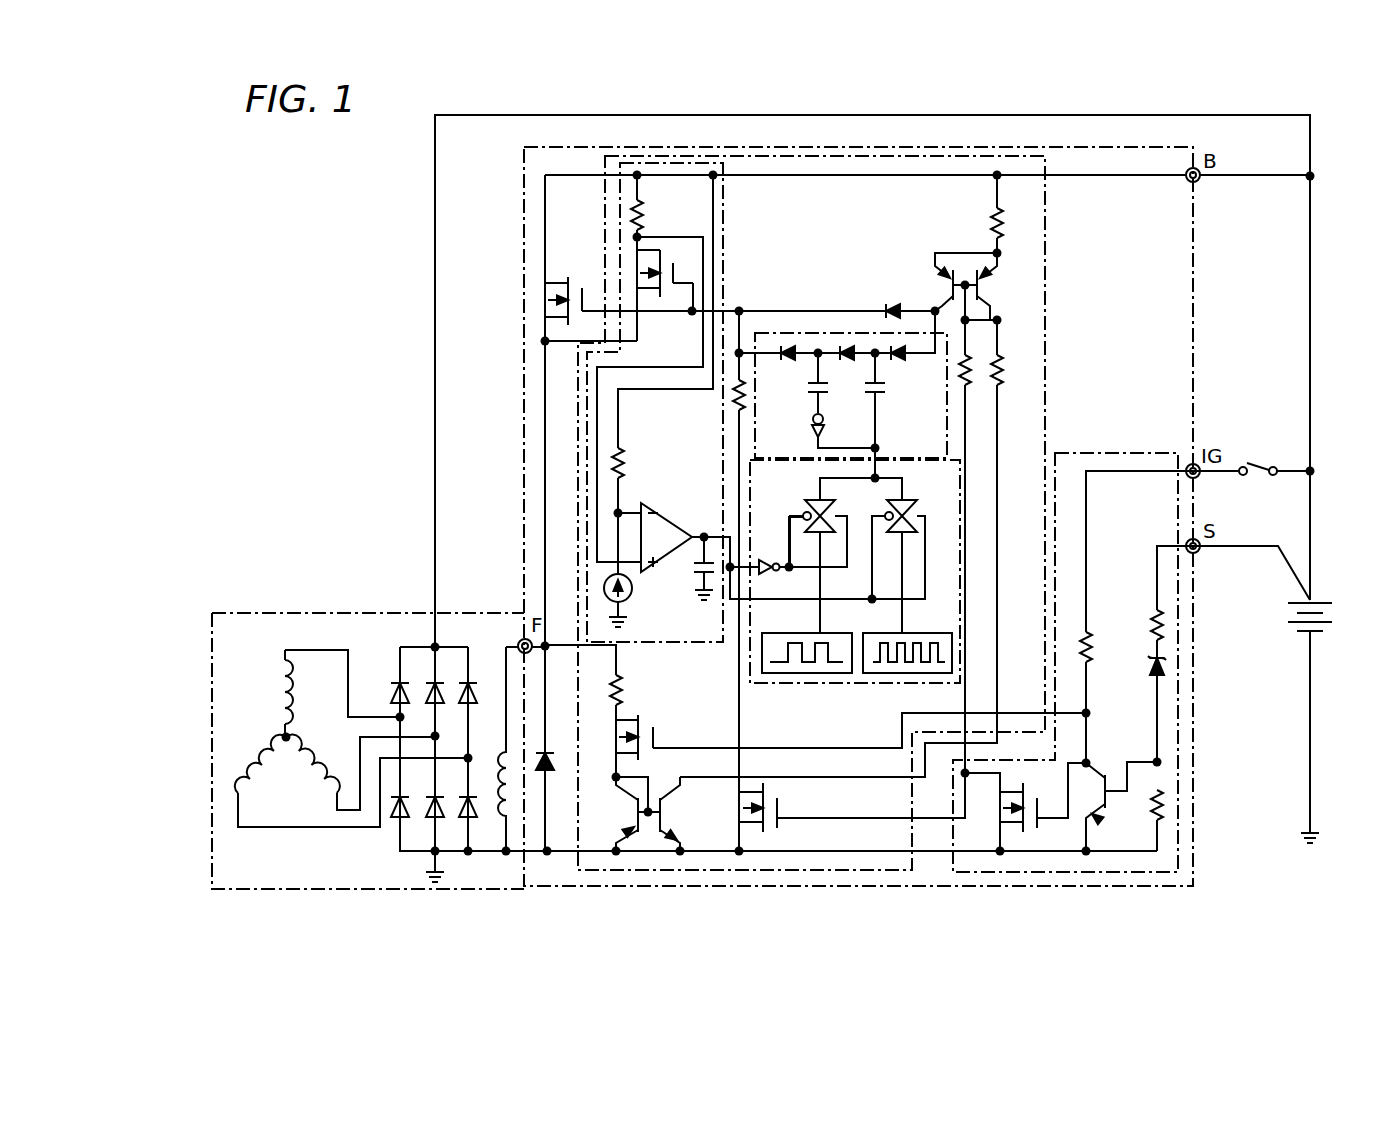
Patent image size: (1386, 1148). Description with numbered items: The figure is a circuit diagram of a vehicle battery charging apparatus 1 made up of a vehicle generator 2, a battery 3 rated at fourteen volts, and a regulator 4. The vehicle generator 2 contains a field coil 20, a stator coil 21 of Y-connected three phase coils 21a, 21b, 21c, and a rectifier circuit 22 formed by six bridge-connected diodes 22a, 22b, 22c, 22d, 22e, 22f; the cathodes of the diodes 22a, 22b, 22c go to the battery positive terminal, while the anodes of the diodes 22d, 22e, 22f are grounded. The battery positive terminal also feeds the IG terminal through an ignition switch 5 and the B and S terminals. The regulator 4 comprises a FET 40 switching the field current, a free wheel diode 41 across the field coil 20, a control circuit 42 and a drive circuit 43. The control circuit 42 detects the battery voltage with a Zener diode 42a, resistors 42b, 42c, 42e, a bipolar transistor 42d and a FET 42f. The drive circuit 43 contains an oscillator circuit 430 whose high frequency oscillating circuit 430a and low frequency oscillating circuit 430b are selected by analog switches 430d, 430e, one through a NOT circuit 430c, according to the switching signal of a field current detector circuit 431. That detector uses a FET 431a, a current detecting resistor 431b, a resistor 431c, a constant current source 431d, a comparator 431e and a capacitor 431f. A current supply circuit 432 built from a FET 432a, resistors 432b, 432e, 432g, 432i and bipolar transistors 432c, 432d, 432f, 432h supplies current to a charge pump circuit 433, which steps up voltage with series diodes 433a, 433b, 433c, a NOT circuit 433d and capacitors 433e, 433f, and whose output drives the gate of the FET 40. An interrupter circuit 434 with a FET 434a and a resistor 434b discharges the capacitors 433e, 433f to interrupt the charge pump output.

The vehicle battery charging apparatus 1 is at (376, 236).
The vehicle generator 2 is at (318, 613).
The battery 3 is at (1317, 600).
The regulator 4 is at (892, 147).
The ignition switch 5 is at (1257, 462).
The field coil 20 is at (505, 835).
The stator coil 21 is at (346, 738).
The phase coil 21a is at (292, 698).
The phase coil 21b is at (312, 787).
The phase coil 21c is at (250, 772).
The rectifier circuit 22 is at (418, 749).
The diode 22a is at (398, 684).
The diode 22b is at (440, 683).
The diode 22c is at (470, 683).
The diode 22d is at (398, 823).
The diode 22e is at (432, 820).
The diode 22f is at (466, 820).
The FET 40 is at (550, 299).
The free wheel diode 41 is at (544, 775).
The control circuit 42 is at (1143, 453).
The Zener diode 42a is at (1170, 669).
The resistor 42b is at (1165, 612).
The resistor 42c is at (1164, 786).
The bipolar transistor 42d is at (1092, 775).
The resistor 42e is at (1094, 640).
The FET 42f is at (994, 812).
The drive circuit 43 is at (1046, 322).
The oscillator circuit 430 is at (830, 683).
The high frequency oscillating circuit 430a is at (870, 683).
The low frequency oscillating circuit 430b is at (787, 683).
The NOT circuit 430c is at (768, 576).
The analog switch 430d is at (904, 510).
The analog switch 430e is at (808, 510).
The field current detector circuit 431 is at (723, 213).
The FET 431a is at (680, 272).
The current detecting resistor 431b is at (644, 220).
The resistor 431c is at (626, 462).
The constant current source 431d is at (633, 596).
The comparator 431e is at (640, 529).
The capacitor 431f is at (705, 546).
The current supply circuit 432 is at (830, 553).
The FET 432a is at (655, 734).
The resistor 432b is at (622, 684).
The bipolar transistor 432c is at (630, 836).
The bipolar transistor 432d is at (677, 818).
The resistor 432e is at (973, 366).
The bipolar transistor 432f is at (992, 284).
The resistor 432g is at (1004, 218).
The bipolar transistor 432h is at (946, 294).
The resistor 432i is at (1005, 382).
The charge pump circuit 433 is at (800, 333).
The diode 433a is at (900, 361).
The diode 433b is at (845, 345).
The diode 433c is at (797, 387).
The NOT circuit 433d is at (812, 433).
The capacitor 433e is at (904, 418).
The capacitor 433f is at (843, 429).
The interrupter circuit 434 is at (753, 654).
The FET 434a is at (782, 802).
The resistor 434b is at (735, 396).